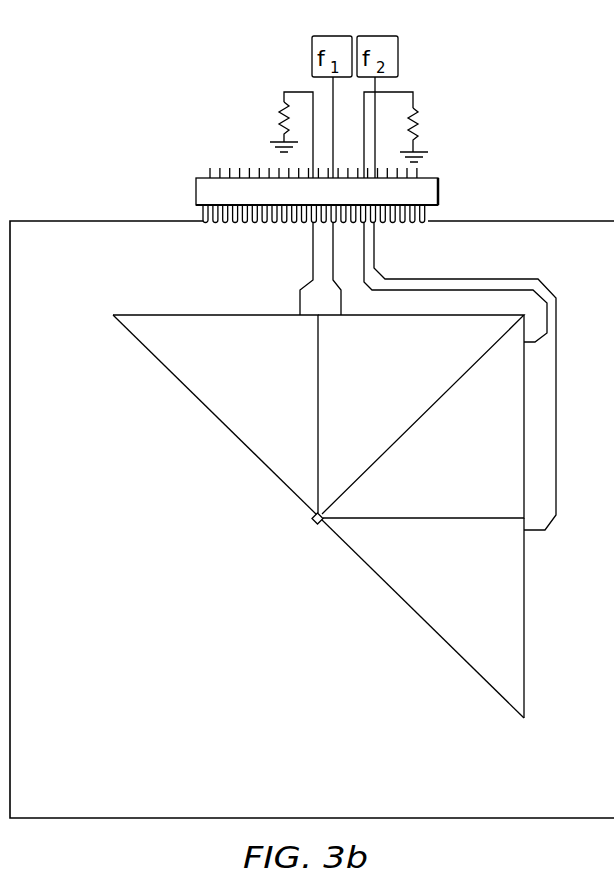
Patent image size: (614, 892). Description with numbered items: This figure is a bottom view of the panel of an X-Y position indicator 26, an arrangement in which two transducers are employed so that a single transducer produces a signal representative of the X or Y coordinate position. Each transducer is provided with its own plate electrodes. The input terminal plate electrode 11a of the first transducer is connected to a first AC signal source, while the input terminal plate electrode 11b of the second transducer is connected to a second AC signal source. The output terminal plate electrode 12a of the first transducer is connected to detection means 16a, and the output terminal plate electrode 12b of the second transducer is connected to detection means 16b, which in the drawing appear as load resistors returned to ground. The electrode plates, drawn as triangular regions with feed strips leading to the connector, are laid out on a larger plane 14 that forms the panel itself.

The X-Y position indicator 26 is at (100, 219).
The ground plane 14 is at (542, 221).
The detection means 16a is at (279, 109).
The detection means 16b is at (415, 109).
The output terminal plate electrode 12a is at (258, 318).
The input terminal plate electrode 11a is at (490, 320).
The output terminal plate electrode 12b is at (512, 450).
The input terminal plate electrode 11b is at (512, 633).